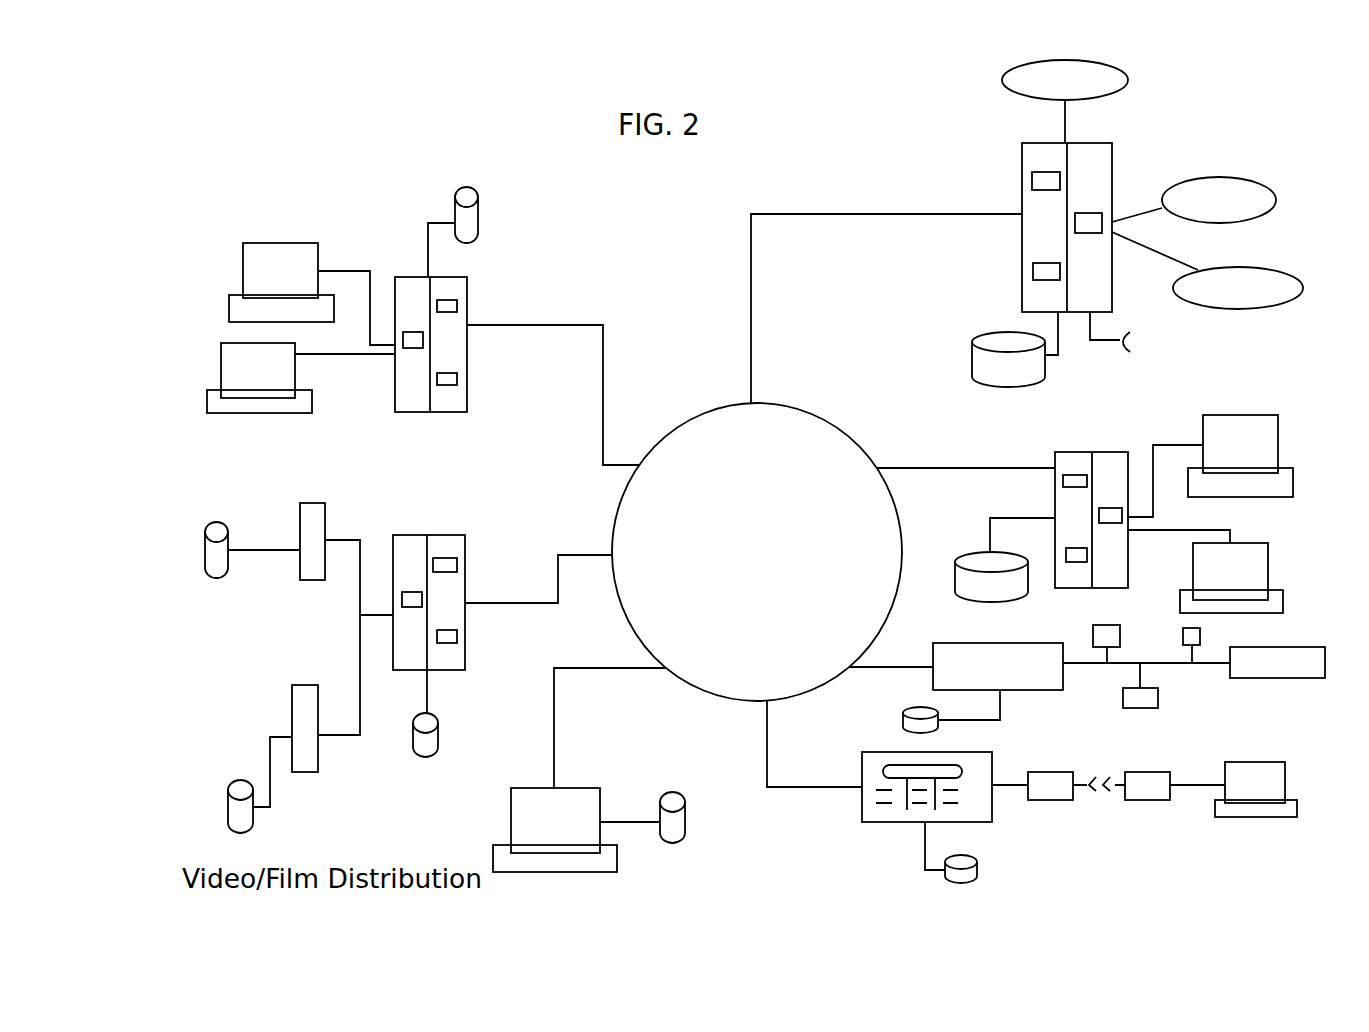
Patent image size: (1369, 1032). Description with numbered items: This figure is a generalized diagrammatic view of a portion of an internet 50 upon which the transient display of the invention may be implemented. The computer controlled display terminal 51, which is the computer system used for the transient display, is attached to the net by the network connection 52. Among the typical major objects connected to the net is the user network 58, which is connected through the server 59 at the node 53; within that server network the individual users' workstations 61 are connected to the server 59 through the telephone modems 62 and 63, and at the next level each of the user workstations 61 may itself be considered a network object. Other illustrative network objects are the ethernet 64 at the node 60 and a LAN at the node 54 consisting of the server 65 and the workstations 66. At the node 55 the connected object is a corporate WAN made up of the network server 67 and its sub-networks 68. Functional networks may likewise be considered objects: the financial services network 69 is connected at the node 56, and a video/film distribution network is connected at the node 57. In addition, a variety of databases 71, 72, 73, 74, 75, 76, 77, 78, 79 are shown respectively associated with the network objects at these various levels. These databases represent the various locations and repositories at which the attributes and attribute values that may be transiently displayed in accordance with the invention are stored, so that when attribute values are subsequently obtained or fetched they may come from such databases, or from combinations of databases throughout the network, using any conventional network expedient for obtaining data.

The Internet 50 is at (703, 452).
The computer controlled display terminal 51 is at (567, 872).
The connection 52 is at (555, 753).
The node 53 is at (765, 700).
The node 54 is at (875, 468).
The node 55 is at (752, 404).
The node 56 is at (641, 467).
The node 57 is at (613, 553).
The user network 58 is at (1050, 800).
The server 59 is at (862, 820).
The node 60 is at (850, 667).
The workstations 61 is at (1257, 763).
The telephone modem 62 is at (1142, 798).
The telephone modem 63 is at (1050, 785).
The ethernet 64 is at (982, 662).
The server 65 is at (1072, 462).
The workstations 66 is at (1255, 415).
The network server 67 is at (1038, 160).
The sub-networks 68 is at (1043, 82).
The financial services network 69 is at (372, 245).
The database 71 is at (687, 817).
The database 72 is at (903, 713).
The database 73 is at (975, 585).
The database 74 is at (1018, 385).
The database 75 is at (977, 877).
The database 76 is at (480, 207).
The database 77 is at (423, 757).
The database 78 is at (238, 808).
The database 79 is at (220, 565).